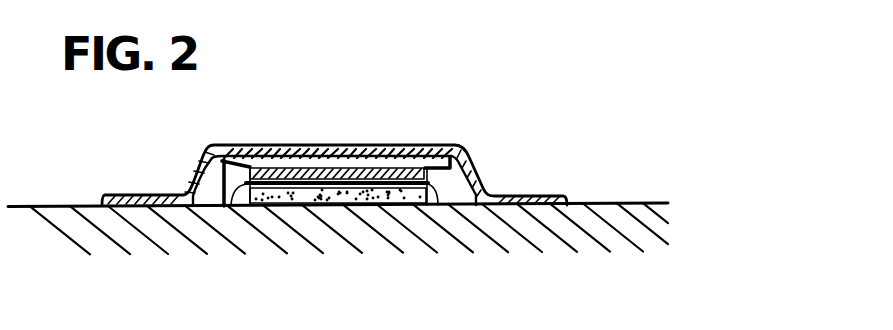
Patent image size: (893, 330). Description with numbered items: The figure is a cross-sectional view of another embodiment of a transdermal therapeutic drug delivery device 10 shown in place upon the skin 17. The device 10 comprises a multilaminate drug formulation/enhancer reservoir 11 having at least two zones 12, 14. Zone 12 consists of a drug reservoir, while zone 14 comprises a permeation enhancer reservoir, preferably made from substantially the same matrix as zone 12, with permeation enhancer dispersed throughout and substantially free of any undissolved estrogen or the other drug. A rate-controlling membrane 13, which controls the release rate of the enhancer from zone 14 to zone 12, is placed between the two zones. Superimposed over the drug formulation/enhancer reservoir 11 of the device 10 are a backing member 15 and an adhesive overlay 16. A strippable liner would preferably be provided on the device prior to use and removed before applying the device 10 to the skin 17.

The transdermal therapeutic delivery device 10 is at (607, 95).
The multilaminate drug formulation/enhancer reservoir 11 is at (363, 205).
The zone 12 is at (437, 203).
The rate-controlling membrane 13 is at (230, 206).
The zone 14 is at (393, 144).
The backing member 15 is at (338, 144).
The adhesive overlay 16 is at (267, 144).
The skin 17 is at (308, 220).